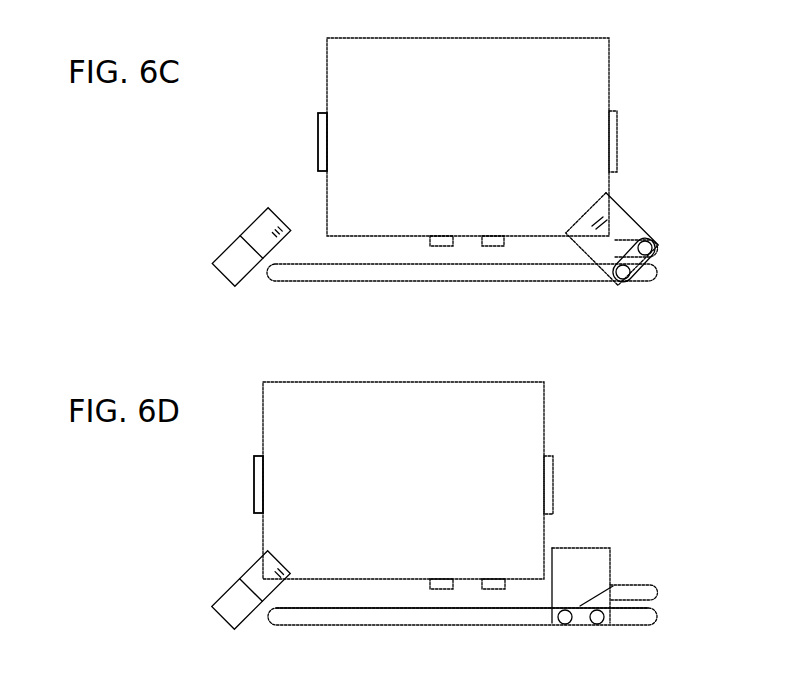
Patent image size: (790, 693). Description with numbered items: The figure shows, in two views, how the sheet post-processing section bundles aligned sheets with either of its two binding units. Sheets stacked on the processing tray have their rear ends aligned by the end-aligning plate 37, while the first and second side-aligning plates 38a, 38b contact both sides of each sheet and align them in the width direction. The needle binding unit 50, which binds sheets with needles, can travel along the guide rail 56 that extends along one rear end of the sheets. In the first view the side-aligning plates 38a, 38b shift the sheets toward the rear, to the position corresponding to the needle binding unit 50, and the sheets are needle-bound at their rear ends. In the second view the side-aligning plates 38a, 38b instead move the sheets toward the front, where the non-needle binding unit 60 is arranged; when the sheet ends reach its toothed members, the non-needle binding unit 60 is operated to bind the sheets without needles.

In FIG. 6C, the end-aligning plate 37 is at (483, 236).
In FIG. 6D, the end-aligning plate 37 is at (487, 578).
In FIG. 6C, the first side-aligning plate 38a is at (613, 135).
In FIG. 6D, the first side-aligning plate 38a is at (548, 472).
In FIG. 6C, the second side-aligning plate 38b is at (320, 136).
In FIG. 6D, the second side-aligning plate 38b is at (258, 498).
In FIG. 6C, the needle binding unit 50 is at (622, 215).
In FIG. 6D, the needle binding unit 50 is at (585, 557).
In FIG. 6C, the guide rail 56 is at (297, 282).
In FIG. 6D, the guide rail 56 is at (307, 610).
In FIG. 6C, the non-needle binding unit 60 is at (237, 250).
In FIG. 6D, the non-needle binding unit 60 is at (233, 595).